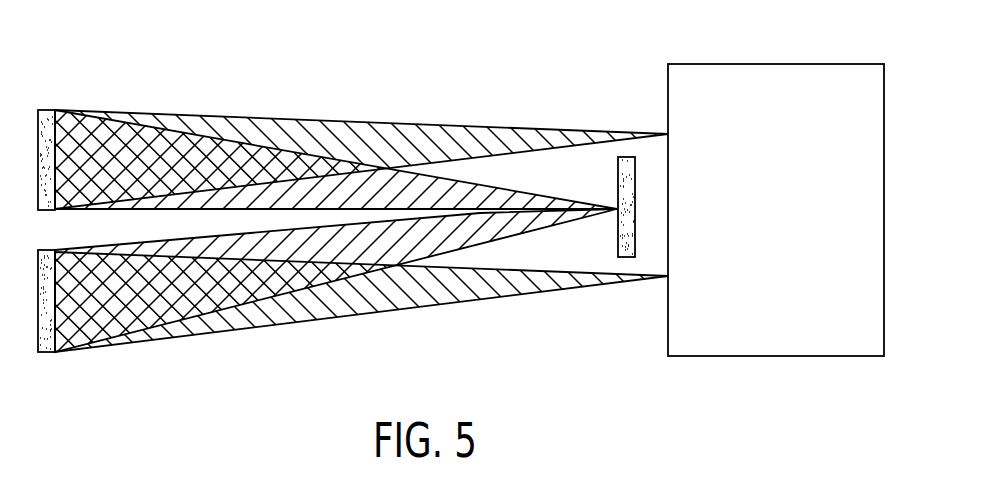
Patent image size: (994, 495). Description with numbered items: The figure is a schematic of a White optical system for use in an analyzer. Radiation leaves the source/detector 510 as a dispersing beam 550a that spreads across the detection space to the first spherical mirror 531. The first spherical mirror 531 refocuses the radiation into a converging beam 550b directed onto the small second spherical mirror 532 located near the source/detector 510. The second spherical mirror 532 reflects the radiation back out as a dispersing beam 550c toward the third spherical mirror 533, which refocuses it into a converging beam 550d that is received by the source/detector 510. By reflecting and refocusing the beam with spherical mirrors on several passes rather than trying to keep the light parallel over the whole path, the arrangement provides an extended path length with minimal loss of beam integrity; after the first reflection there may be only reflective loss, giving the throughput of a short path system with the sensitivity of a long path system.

The source/detector 510 is at (710, 64).
The first spherical mirror 531 is at (48, 110).
The second spherical mirror 532 is at (625, 157).
The third spherical mirror 533 is at (43, 353).
The dispersing beam 550a is at (502, 128).
The converging beam 550b is at (513, 190).
The dispersing beam 550c is at (518, 235).
The converging beam 550d is at (473, 300).